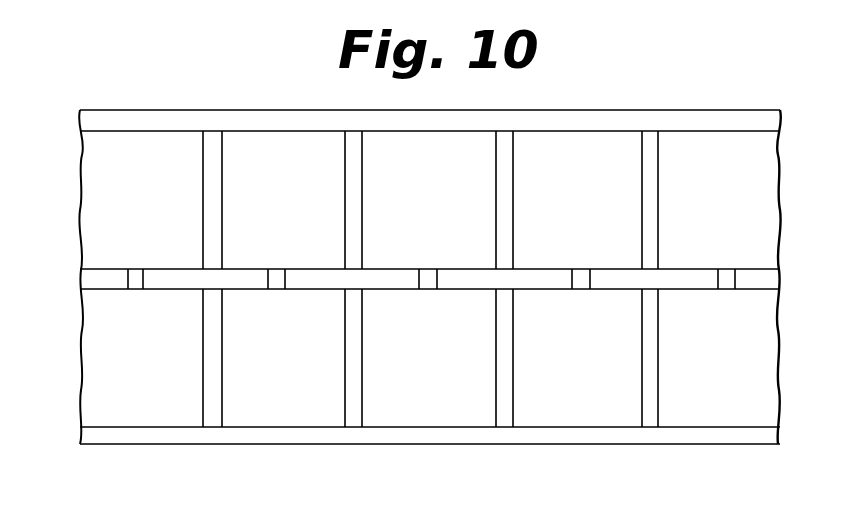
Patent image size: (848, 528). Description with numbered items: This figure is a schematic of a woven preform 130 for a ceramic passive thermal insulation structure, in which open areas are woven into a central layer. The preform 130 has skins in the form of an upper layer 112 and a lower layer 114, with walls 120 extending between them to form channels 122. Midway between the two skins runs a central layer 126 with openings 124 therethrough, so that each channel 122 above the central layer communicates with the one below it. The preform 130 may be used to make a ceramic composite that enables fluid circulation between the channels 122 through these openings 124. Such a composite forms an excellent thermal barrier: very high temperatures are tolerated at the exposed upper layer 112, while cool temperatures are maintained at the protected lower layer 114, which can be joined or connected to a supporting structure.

The preform 130 is at (66, 177).
The upper layer 112 is at (718, 110).
The lower layer 114 is at (706, 436).
The walls 120 is at (213, 191).
The channels 122 is at (162, 157).
The openings 124 is at (427, 269).
The central layer 126 is at (782, 280).